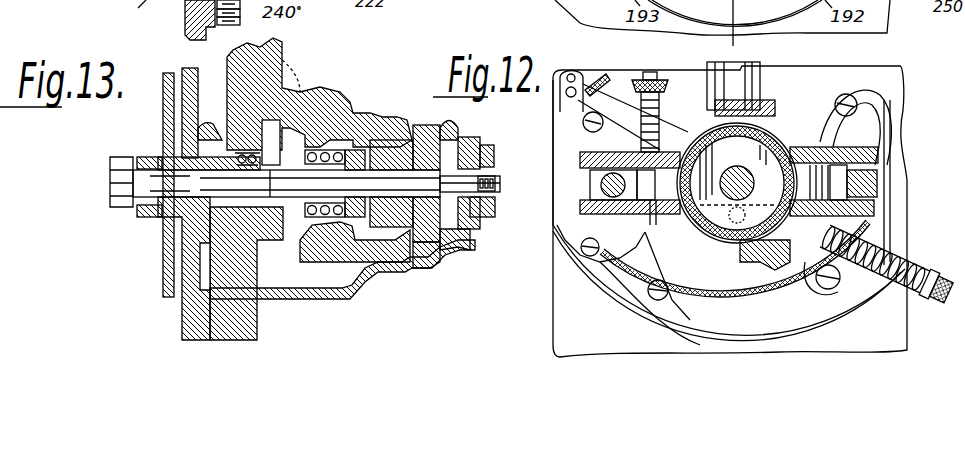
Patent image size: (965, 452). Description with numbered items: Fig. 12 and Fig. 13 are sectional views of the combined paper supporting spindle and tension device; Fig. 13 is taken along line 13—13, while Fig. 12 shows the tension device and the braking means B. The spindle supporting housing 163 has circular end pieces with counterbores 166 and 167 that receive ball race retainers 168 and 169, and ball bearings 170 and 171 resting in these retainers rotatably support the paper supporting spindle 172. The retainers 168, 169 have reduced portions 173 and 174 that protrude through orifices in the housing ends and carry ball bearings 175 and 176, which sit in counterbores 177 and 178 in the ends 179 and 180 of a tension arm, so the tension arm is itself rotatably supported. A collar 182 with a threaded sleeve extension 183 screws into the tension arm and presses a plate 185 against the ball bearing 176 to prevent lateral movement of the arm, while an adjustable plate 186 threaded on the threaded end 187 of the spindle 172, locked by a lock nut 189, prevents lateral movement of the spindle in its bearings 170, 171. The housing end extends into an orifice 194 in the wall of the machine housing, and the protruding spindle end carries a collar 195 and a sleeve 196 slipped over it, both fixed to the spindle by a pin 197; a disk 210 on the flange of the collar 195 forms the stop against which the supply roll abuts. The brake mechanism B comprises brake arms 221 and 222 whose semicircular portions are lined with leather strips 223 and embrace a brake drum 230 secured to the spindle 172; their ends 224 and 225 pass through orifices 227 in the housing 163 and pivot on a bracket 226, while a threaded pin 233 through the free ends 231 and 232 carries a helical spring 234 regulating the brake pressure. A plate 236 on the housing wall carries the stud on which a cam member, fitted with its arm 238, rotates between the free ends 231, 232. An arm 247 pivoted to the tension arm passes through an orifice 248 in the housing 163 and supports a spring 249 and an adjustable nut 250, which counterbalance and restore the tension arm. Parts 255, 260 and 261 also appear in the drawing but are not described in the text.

In FIG. 12, the shaft 13 is at (735, 64).
In FIG. 13, the spindle supporting housing 163 is at (345, 300).
In FIG. 13, the counterbore 166 is at (186, 121).
In FIG. 13, the counterbore 167 is at (482, 148).
In FIG. 13, the ball race retainer 168 is at (172, 140).
In FIG. 13, the ball race retainer 169 is at (457, 257).
In FIG. 13, the ball bearing 170 is at (190, 232).
In FIG. 13, the ball bearing 171 is at (470, 243).
In FIG. 13, the paper supporting spindle 172 is at (360, 150).
In FIG. 12, the paper supporting spindle 172 is at (737, 183).
In FIG. 13, the reduced portion 173 is at (262, 290).
In FIG. 13, the reduced portion 174 is at (402, 265).
In FIG. 13, the ball bearing 175 is at (283, 92).
In FIG. 13, the ball bearing 176 is at (438, 262).
In FIG. 13, the counterbore 177 is at (178, 315).
In FIG. 13, the counterbore 178 is at (425, 140).
In FIG. 13, the end of tension arm 179 is at (222, 122).
In FIG. 13, the end of tension arm 180 is at (462, 132).
In FIG. 13, the collar 182 is at (375, 212).
In FIG. 13, the threaded sleeve extension 183 is at (382, 258).
In FIG. 13, the plate 185 is at (415, 140).
In FIG. 13, the adjustable plate 186 is at (484, 228).
In FIG. 13, the threaded end of spindle 187 is at (482, 175).
In FIG. 13, the lock nut 189 is at (482, 208).
In FIG. 13, the orifice 194 is at (200, 294).
In FIG. 13, the collar 195 is at (167, 143).
In FIG. 13, the sleeve 196 is at (110, 184).
In FIG. 13, the pin 197 is at (185, 215).
In FIG. 13, the disk 210 is at (165, 75).
In FIG. 13, the brake arm 221 is at (333, 103).
In FIG. 12, the brake arm 221 is at (750, 123).
In FIG. 13, the brake arm 222 is at (318, 302).
In FIG. 12, the brake arm 222 is at (805, 228).
In FIG. 13, the strips of leather 223 is at (330, 73).
In FIG. 12, the strips of leather 223 is at (690, 167).
In FIG. 12, the end of brake arm 224 is at (875, 153).
In FIG. 12, the end of brake arm 225 is at (800, 262).
In FIG. 12, the bracket 226 is at (880, 188).
In FIG. 12, the orifices 227 is at (880, 172).
In FIG. 13, the brake drum 230 is at (340, 298).
In FIG. 12, the brake drum 230 is at (665, 292).
In FIG. 12, the free end of brake arm 231 is at (590, 165).
In FIG. 12, the free end of brake arm 232 is at (570, 253).
In FIG. 12, the threaded pin 233 is at (652, 214).
In FIG. 12, the helical spring 234 is at (661, 96).
In FIG. 13, the plate 236 is at (135, 13).
In FIG. 12, the plate 236 is at (597, 257).
In FIG. 12, the arm 238 is at (593, 56).
In FIG. 12, the arm 247 is at (858, 277).
In FIG. 12, the orifice 248 is at (842, 279).
In FIG. 12, the spring 249 is at (908, 270).
In FIG. 12, the adjustable nut 250 is at (942, 300).
In FIG. 12, the screw head 255 is at (660, 80).
In FIG. 12, the screw 260 is at (633, 112).
In FIG. 12, the plate 261 is at (625, 228).
In FIG. 13, the brake mechanism B is at (330, 88).